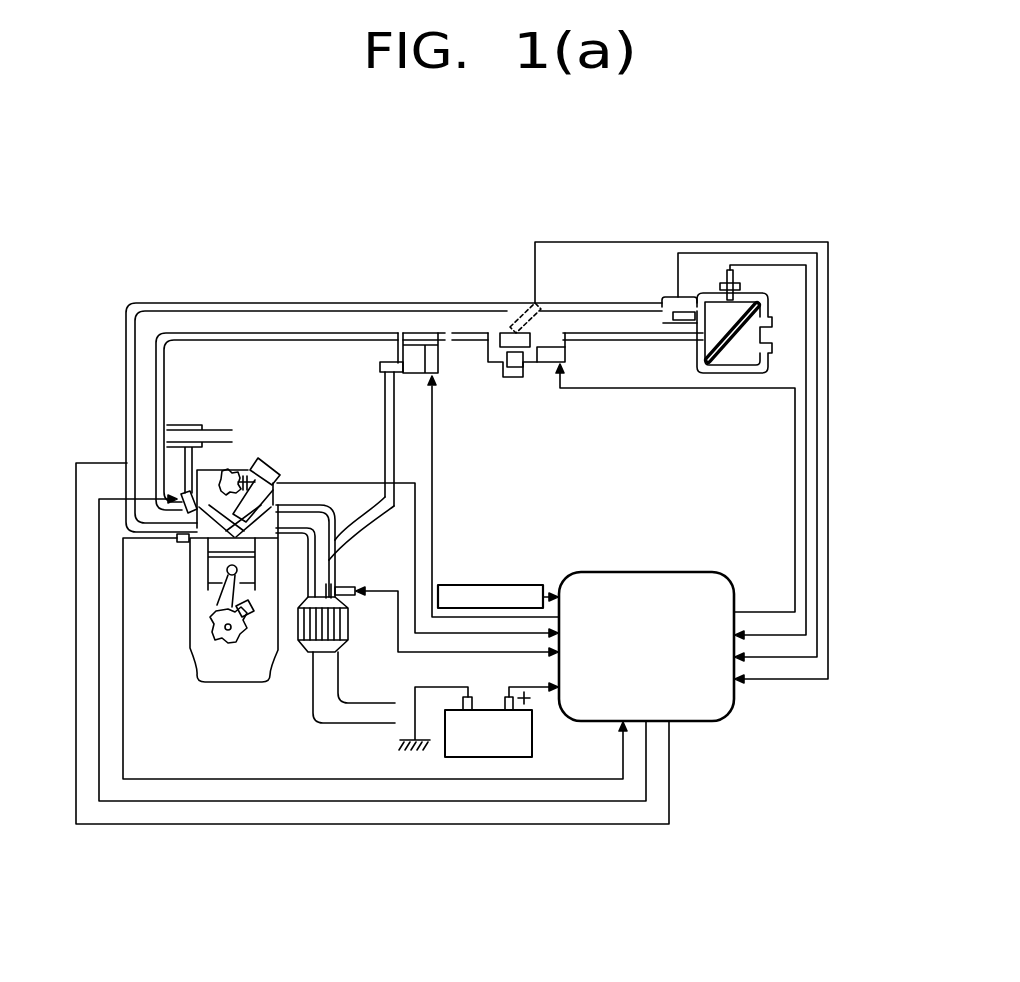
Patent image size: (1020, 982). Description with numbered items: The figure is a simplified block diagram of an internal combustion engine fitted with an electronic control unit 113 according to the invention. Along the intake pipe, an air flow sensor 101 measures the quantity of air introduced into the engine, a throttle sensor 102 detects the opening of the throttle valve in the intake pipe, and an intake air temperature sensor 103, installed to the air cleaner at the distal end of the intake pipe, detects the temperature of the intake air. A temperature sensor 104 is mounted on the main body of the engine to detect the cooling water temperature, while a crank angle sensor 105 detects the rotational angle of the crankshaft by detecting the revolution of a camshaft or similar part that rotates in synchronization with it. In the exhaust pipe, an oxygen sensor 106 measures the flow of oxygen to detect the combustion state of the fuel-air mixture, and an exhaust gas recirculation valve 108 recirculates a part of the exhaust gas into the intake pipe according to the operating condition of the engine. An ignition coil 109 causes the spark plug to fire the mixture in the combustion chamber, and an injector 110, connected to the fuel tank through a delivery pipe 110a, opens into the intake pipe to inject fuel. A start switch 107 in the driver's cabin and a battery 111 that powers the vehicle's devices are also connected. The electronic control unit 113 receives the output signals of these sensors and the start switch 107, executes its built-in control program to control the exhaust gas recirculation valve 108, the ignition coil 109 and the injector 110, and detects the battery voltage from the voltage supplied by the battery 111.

The air flow sensor 101 is at (668, 297).
The throttle sensor 102 is at (533, 303).
The intake air temperature sensor 103 is at (728, 268).
The temperature sensor 104 is at (185, 540).
The crank angle sensor 105 is at (246, 462).
The oxygen sensor 106 is at (345, 582).
The start switch 107 is at (492, 585).
The exhaust gas recirculation valve 108 is at (400, 334).
The ignition coil 109 is at (279, 474).
The injector 110 is at (181, 492).
The delivery pipe 110a is at (213, 427).
The battery 111 is at (532, 733).
The electronic control unit 113 is at (646, 572).